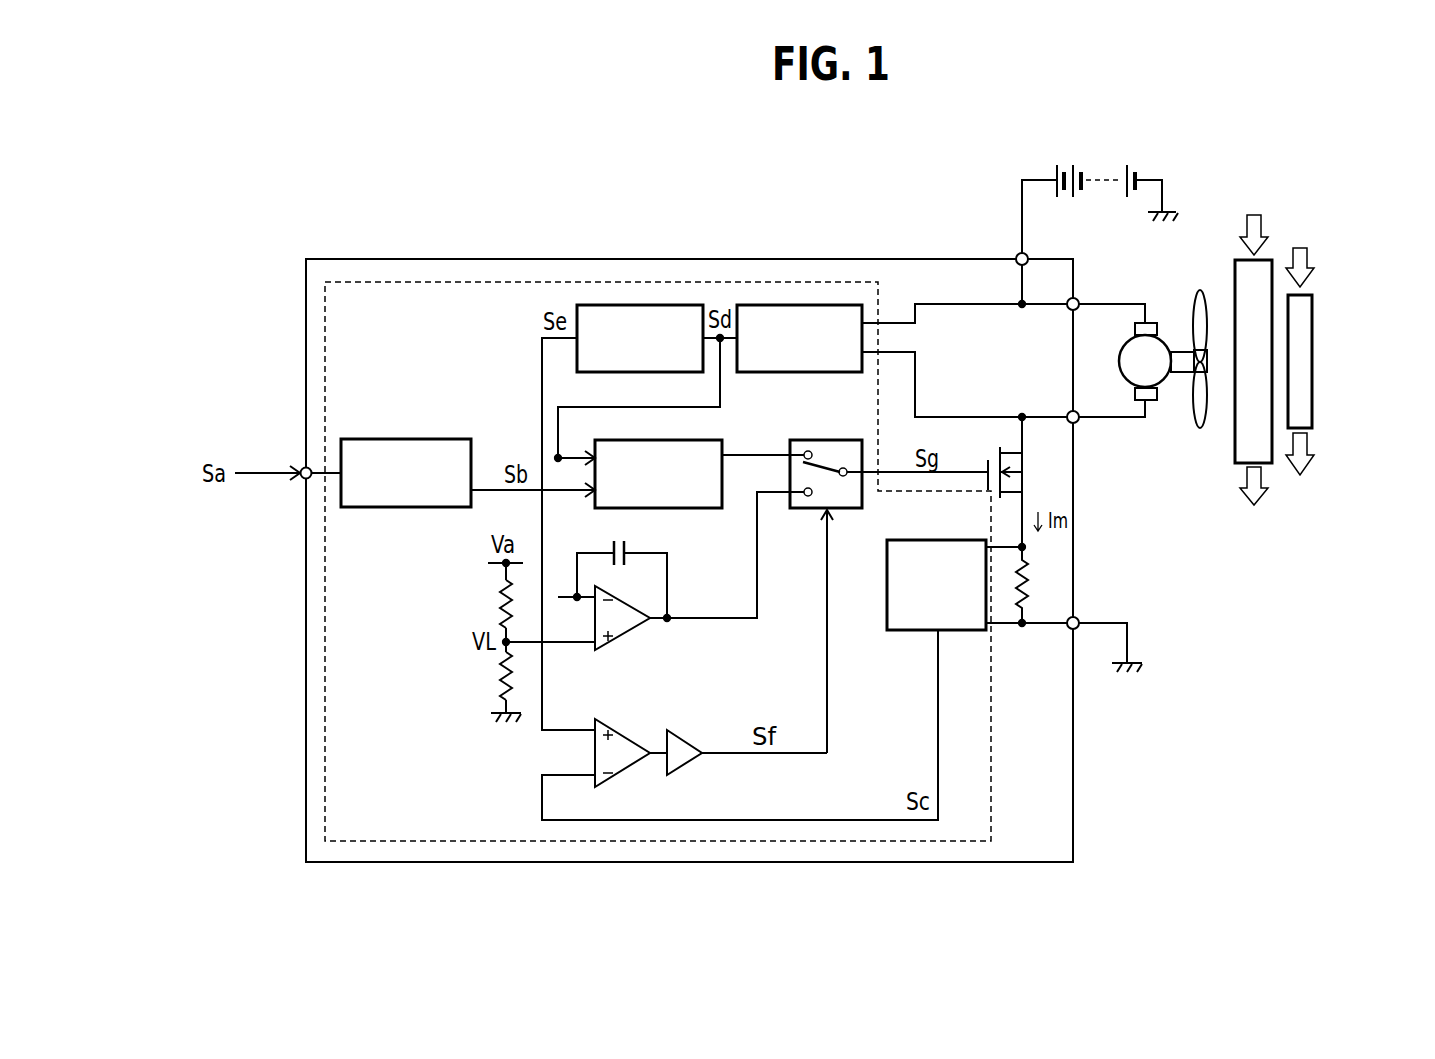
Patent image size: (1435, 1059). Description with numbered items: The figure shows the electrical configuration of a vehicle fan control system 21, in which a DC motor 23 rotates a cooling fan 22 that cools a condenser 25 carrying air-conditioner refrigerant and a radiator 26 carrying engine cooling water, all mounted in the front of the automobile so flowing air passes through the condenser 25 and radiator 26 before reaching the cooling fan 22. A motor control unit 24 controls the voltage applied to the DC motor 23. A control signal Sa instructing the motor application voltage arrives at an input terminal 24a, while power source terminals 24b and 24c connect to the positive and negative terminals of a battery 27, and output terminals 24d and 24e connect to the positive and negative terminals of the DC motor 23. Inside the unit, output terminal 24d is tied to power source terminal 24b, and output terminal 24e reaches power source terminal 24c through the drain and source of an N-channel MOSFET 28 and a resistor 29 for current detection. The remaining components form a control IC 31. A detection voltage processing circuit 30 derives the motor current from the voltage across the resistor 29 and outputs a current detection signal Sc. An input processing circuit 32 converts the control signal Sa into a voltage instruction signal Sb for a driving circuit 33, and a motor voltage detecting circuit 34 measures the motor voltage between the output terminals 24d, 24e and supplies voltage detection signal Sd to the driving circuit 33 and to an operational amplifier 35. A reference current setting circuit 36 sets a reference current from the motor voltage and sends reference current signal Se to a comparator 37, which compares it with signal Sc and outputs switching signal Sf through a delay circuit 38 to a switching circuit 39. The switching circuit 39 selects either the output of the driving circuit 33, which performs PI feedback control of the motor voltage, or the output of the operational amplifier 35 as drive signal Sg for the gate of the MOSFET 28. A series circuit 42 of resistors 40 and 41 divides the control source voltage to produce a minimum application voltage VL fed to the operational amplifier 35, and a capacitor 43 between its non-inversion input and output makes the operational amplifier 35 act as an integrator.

The fan control system 21 is at (693, 212).
The cooling fan 22 is at (1196, 291).
The DC motor 23 is at (1120, 365).
The motor control unit 24 is at (733, 259).
The input terminal 24a is at (300, 468).
The power source terminal 24b is at (1017, 254).
The power source terminal 24c is at (1078, 618).
The output terminal 24d is at (1079, 298).
The output terminal 24e is at (1078, 424).
The condenser 25 is at (1315, 414).
The radiator 26 is at (1235, 442).
The battery 27 is at (1075, 162).
The N-channel type MOSFET 28 is at (1027, 466).
The resistor for current detection 29 is at (1030, 580).
The detection voltage processing circuit 30 is at (950, 540).
The IC 31 is at (884, 298).
The input processing circuit 32 is at (400, 439).
The driving circuit 33 is at (667, 440).
The motor voltage detecting circuit 34 is at (775, 373).
The operational amplifier 35 is at (633, 633).
The reference current setting circuit 36 is at (577, 350).
The comparator 37 is at (631, 727).
The delay circuit 38 is at (688, 729).
The switching circuit 39 is at (833, 440).
The resistor 40 is at (490, 606).
The resistor 41 is at (490, 676).
The series circuit 42 is at (437, 646).
The capacitor 43 is at (638, 545).